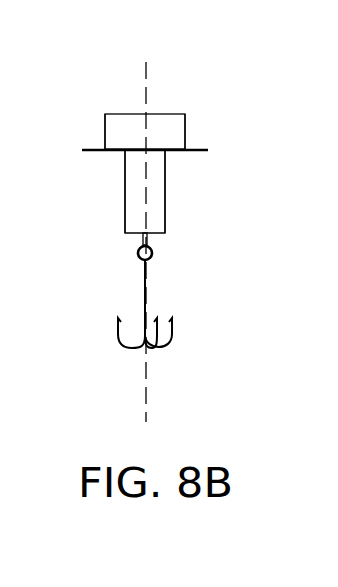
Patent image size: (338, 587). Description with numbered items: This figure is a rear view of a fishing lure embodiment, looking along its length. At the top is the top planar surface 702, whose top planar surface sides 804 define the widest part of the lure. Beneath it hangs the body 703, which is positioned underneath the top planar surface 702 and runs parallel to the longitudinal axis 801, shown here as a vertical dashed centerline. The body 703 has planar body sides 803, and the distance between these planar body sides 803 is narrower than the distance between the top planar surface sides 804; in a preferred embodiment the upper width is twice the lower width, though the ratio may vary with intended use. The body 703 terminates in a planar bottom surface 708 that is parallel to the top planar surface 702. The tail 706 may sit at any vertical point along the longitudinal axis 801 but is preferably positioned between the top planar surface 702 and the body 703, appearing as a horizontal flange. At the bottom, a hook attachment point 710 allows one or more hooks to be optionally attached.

The longitudinal axis 801 is at (183, 223).
The top planar surface 702 is at (119, 98).
The top planar surface sides 804 is at (146, 120).
The tail 706 is at (199, 132).
The body 703 is at (182, 191).
The planar body sides 803 is at (145, 191).
The planar bottom surface 708 is at (107, 250).
The hook attachment points 710 is at (186, 253).